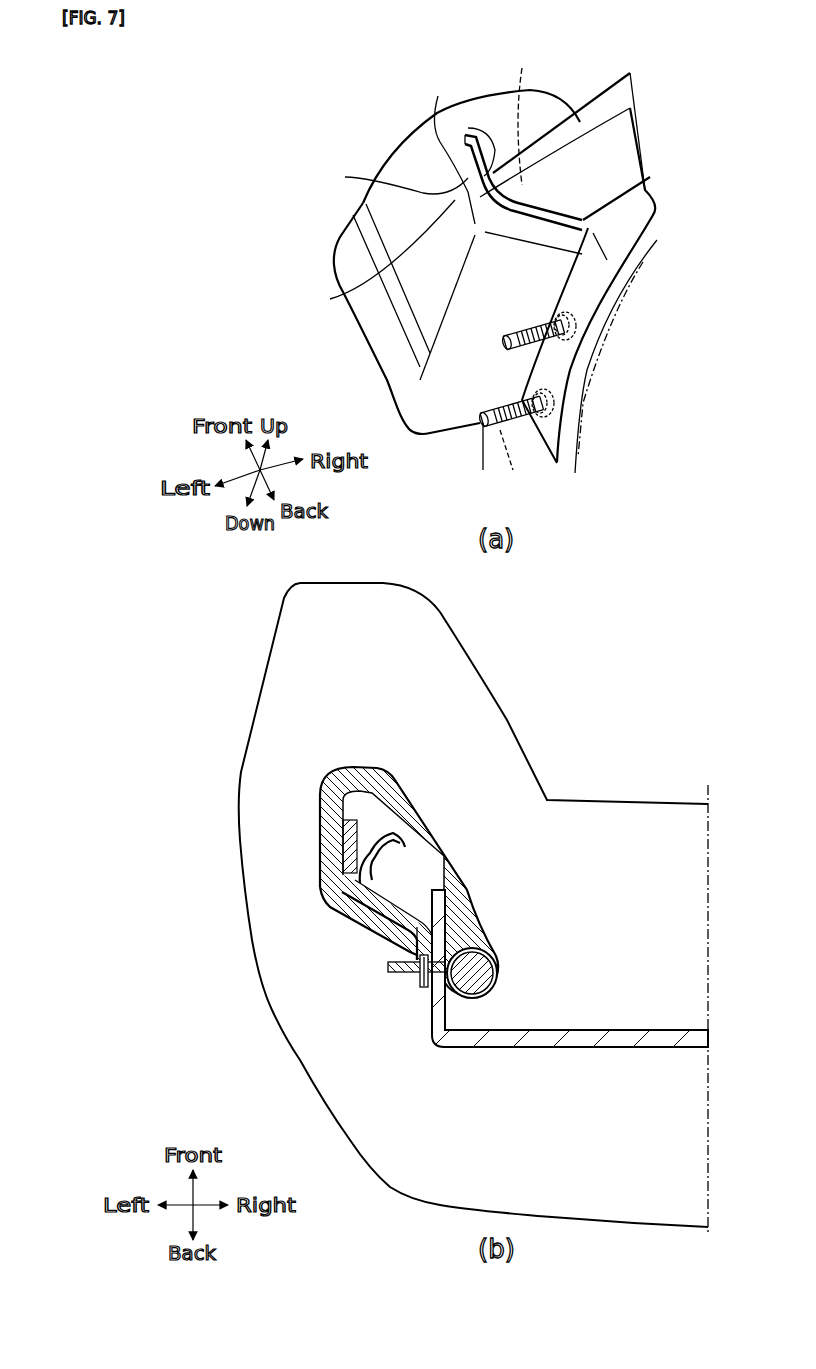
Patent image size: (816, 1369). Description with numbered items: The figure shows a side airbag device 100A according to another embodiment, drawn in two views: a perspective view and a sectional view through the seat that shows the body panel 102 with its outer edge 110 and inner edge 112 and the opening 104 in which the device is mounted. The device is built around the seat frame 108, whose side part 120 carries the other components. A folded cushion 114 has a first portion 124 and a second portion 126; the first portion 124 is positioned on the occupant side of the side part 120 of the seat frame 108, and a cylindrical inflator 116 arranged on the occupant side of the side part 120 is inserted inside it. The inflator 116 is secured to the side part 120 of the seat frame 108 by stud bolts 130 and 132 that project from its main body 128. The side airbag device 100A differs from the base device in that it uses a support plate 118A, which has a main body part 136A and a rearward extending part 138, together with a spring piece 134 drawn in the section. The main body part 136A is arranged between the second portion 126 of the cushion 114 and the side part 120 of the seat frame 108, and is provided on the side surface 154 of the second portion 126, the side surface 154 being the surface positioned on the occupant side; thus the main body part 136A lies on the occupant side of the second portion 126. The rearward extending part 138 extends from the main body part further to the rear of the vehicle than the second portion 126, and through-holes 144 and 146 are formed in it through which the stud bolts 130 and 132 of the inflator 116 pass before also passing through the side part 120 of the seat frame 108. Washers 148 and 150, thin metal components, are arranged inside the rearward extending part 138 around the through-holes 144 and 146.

The side airbag device 100A is at (385, 106).
The vehicle body panel 102 is at (492, 648).
The opening 104 is at (335, 1050).
The seat frame 108 is at (657, 240).
The outer edge 110 is at (247, 910).
The inner edge 112 is at (287, 977).
The cushion 114 is at (472, 95).
The inflator 116 is at (498, 967).
The support plate 118A is at (562, 212).
The side part 120 is at (623, 157).
The first portion 124 is at (552, 112).
The second portion 126 is at (313, 930).
The main body 128 is at (493, 988).
The stud bolt 130 is at (530, 330).
The stud bolt 132 is at (497, 410).
The spring piece 134 is at (390, 830).
The main body part 136A is at (467, 127).
The rearward extending part 138 is at (560, 370).
The through-hole 144 is at (573, 324).
The through-hole 146 is at (550, 412).
The washer 148 is at (574, 335).
The washer 150 is at (552, 403).
The side surface 154 is at (222, 858).